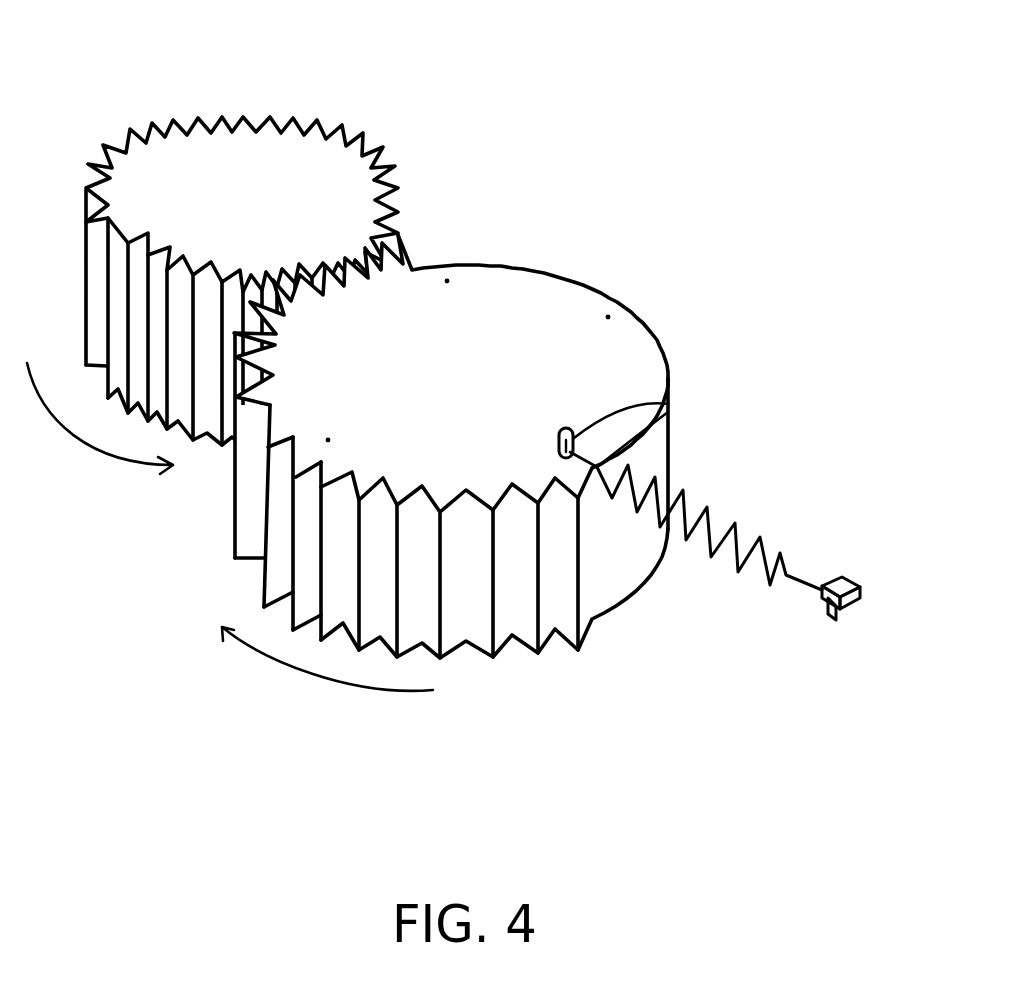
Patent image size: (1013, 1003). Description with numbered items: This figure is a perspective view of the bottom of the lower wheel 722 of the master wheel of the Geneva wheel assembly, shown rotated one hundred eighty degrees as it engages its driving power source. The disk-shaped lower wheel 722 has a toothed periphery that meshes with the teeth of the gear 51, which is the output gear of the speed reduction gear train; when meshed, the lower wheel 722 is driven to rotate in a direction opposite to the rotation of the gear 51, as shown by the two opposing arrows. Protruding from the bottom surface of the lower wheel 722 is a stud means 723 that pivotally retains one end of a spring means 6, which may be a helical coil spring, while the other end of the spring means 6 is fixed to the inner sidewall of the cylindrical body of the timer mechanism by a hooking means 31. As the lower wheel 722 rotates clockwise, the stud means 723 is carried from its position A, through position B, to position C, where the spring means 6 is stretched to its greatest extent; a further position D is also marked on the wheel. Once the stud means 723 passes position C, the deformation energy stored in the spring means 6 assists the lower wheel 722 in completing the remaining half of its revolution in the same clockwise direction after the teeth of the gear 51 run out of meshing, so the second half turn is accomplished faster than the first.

The gear 51 is at (245, 147).
The lower wheel 722 is at (528, 287).
The stud means 723 is at (668, 405).
The spring means 6 is at (720, 517).
The hooking means 31 is at (835, 582).
The position A is at (560, 447).
The position B is at (328, 440).
The position C is at (447, 281).
The position D is at (608, 317).